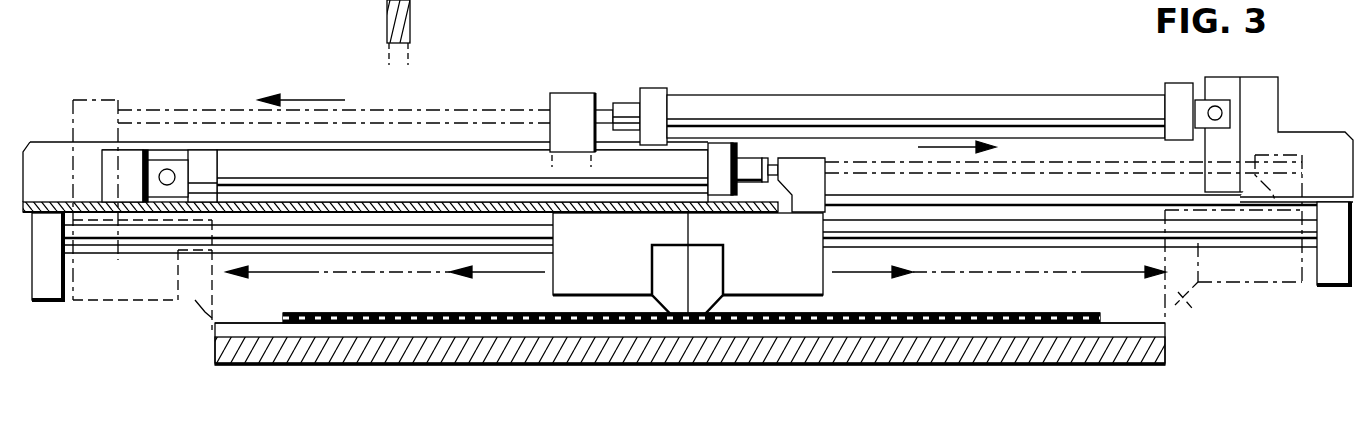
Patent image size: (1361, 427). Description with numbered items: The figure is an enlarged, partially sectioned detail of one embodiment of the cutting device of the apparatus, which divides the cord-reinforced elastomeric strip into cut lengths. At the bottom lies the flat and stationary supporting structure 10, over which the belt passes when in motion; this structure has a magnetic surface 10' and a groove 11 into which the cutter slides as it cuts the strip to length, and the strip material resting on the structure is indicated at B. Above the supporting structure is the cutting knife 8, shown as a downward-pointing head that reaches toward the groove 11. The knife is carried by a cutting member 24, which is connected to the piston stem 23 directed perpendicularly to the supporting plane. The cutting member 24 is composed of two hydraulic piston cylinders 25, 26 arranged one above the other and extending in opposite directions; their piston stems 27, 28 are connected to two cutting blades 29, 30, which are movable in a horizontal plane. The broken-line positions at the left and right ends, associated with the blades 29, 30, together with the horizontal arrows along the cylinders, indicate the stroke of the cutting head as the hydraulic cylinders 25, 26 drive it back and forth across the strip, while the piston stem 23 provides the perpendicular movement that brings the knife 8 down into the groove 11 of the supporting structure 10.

The cutting knife 8 is at (602, 285).
The supporting structure 10 is at (690, 363).
The magnetic surface 10' is at (690, 303).
The groove 11 is at (965, 323).
The bead B is at (450, 314).
The piston stem 23 is at (1318, 145).
The cutting member 24 is at (918, 88).
The hydraulic piston cylinder 25 is at (812, 97).
The hydraulic piston cylinder 26 is at (485, 157).
The piston stem 27 is at (207, 118).
The piston stem 28 is at (773, 163).
The cutting blade 29 is at (195, 300).
The cutting blade 30 is at (1192, 306).